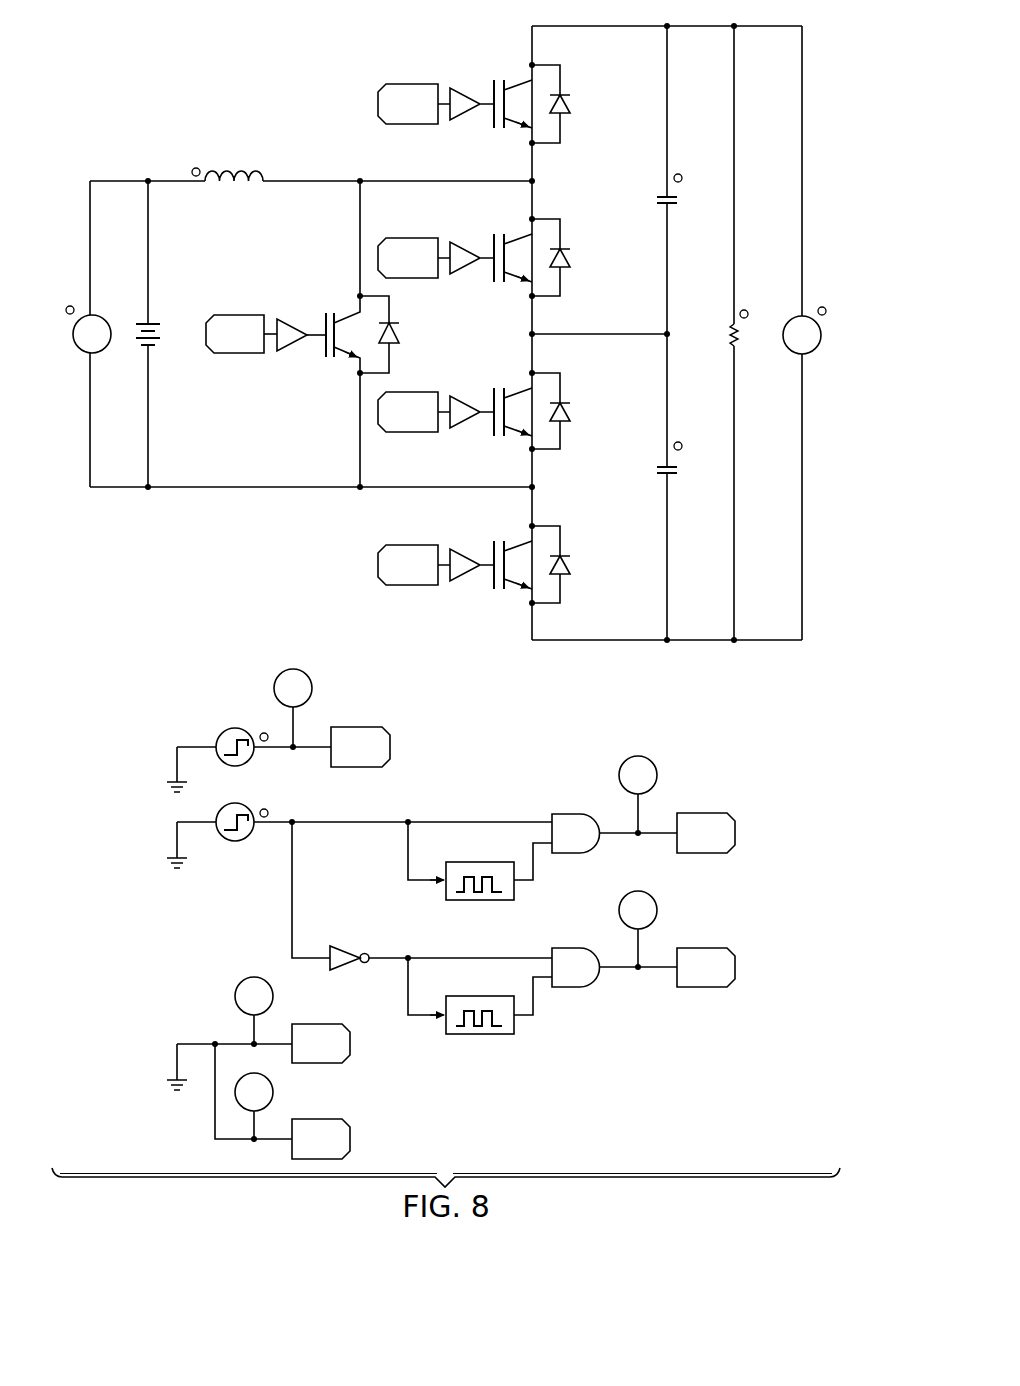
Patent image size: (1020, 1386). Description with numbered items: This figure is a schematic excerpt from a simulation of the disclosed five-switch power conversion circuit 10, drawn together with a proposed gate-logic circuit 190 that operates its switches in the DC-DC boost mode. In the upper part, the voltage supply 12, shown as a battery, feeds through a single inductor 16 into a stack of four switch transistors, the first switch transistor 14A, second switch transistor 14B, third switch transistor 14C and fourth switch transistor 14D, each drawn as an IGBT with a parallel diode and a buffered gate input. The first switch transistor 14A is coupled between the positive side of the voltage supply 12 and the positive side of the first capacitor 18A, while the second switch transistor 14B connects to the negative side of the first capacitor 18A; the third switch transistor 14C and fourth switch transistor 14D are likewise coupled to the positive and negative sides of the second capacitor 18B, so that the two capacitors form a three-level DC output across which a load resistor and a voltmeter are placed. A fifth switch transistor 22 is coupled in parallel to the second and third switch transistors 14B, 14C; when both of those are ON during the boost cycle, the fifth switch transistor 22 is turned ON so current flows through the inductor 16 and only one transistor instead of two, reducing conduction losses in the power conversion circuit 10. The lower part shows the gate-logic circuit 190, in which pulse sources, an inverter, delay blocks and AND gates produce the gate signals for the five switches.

The power conversion circuit 10 is at (210, 74).
The voltage supply 12 is at (138, 330).
The first switch transistor 14A is at (586, 86).
The second switch transistor 14B is at (586, 237).
The third switch transistor 14C is at (586, 430).
The fourth switch transistor 14D is at (586, 582).
The inductor 16 is at (270, 178).
The first capacitor 18A is at (657, 200).
The second capacitor 18B is at (657, 470).
The fifth switch transistor 22 is at (330, 298).
The gate-logic circuit 190 is at (233, 620).